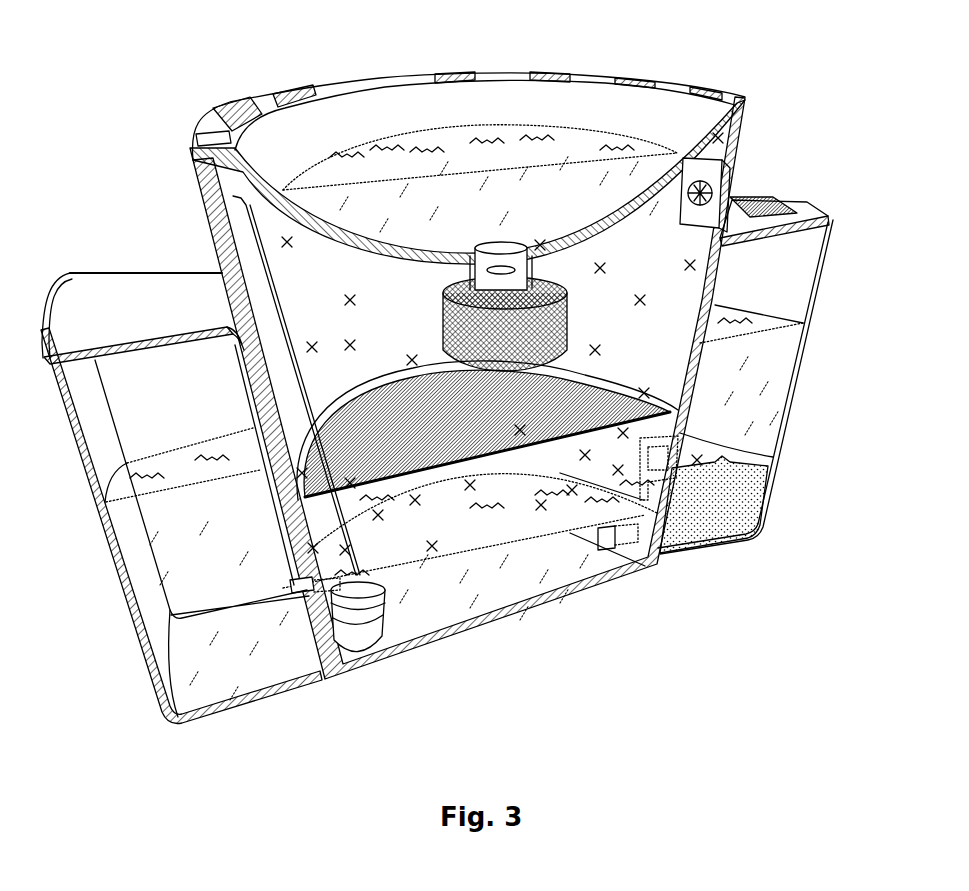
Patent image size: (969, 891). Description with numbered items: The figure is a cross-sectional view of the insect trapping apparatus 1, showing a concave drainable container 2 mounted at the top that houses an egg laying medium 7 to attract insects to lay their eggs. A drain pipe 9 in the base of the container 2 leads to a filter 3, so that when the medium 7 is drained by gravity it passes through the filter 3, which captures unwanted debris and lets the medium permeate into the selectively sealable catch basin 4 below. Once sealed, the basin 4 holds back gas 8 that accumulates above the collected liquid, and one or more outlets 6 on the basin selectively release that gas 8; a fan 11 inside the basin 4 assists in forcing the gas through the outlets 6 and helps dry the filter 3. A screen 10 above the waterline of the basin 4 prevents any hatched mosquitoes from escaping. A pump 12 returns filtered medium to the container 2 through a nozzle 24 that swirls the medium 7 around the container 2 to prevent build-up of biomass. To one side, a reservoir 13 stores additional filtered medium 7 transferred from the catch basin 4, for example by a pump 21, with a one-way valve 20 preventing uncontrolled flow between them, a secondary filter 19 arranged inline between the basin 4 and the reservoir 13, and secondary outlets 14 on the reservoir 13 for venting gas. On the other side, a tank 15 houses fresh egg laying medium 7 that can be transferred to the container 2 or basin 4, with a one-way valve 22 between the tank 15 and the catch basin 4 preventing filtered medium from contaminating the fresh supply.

The apparatus 1 is at (190, 220).
The drainable container 2 is at (382, 268).
The filter 3 is at (572, 330).
The selectively sealable catch basin 4 is at (527, 614).
The outlets 6 is at (272, 85).
The egg laying medium 7 is at (503, 211).
The gas 8 is at (343, 300).
The drain pipe 9 is at (540, 268).
The screen 10 is at (427, 434).
The fan 11 is at (733, 184).
The pump 12 is at (359, 645).
The reservoir 13 is at (806, 367).
The secondary outlets 14 is at (790, 205).
The tank 15 is at (172, 716).
The secondary filter 19 is at (762, 500).
The one-way valve 20 is at (668, 559).
The pump 21 is at (606, 545).
The one-way valve 22 is at (290, 586).
The nozzle 24 is at (282, 186).